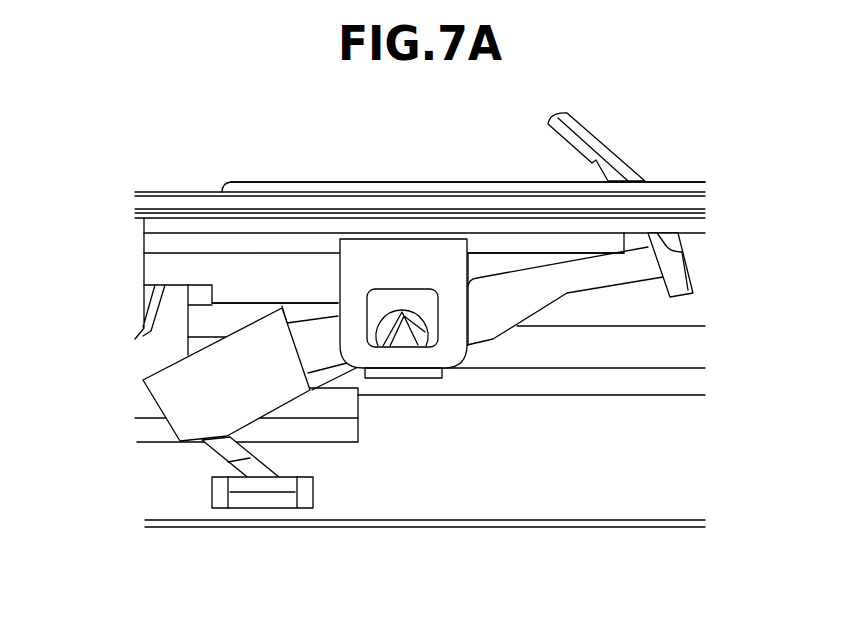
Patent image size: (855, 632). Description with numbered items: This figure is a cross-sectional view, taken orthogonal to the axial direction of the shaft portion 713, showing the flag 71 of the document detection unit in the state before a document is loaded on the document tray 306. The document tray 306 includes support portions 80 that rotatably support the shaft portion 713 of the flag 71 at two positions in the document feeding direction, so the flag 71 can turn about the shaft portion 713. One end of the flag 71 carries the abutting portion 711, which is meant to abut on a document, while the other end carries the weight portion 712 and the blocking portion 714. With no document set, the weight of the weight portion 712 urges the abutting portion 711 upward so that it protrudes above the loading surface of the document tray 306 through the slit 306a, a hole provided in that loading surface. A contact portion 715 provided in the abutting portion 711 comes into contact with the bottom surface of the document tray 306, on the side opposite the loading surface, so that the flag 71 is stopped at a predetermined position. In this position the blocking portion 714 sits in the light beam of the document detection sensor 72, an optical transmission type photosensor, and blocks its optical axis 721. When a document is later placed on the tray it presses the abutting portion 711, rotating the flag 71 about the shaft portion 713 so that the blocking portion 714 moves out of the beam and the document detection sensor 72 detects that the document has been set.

The document tray 306 is at (157, 204).
The slit 306a is at (670, 181).
The flag 71 is at (597, 278).
The abutting portion 711 is at (578, 116).
The weight portion 712 is at (160, 388).
The shaft portion 713 is at (418, 313).
The blocking portion 714 is at (242, 470).
The contact portion 715 is at (695, 268).
The document detection sensor 72 is at (223, 492).
The optical axis 721 is at (247, 500).
The support portion 80 is at (362, 257).